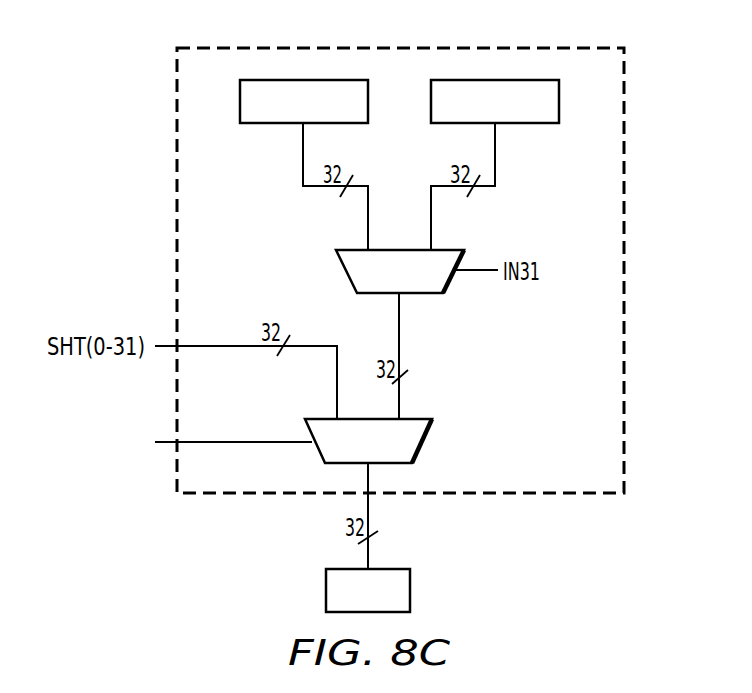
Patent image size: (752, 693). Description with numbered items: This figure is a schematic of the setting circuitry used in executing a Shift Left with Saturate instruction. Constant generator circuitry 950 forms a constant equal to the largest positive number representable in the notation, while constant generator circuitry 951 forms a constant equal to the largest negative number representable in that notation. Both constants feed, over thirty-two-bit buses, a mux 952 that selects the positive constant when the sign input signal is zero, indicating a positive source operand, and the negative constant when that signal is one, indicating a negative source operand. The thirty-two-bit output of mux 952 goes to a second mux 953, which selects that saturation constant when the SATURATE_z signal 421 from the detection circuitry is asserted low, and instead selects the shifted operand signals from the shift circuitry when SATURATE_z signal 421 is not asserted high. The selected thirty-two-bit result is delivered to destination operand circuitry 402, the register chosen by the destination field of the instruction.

The constant generator circuitry 950 is at (270, 124).
The constant generator circuitry 951 is at (527, 124).
The mux 952 is at (338, 264).
The mux 953 is at (423, 441).
The SATURATE_z signal 421 is at (275, 440).
The destination operand circuitry 402 is at (412, 590).